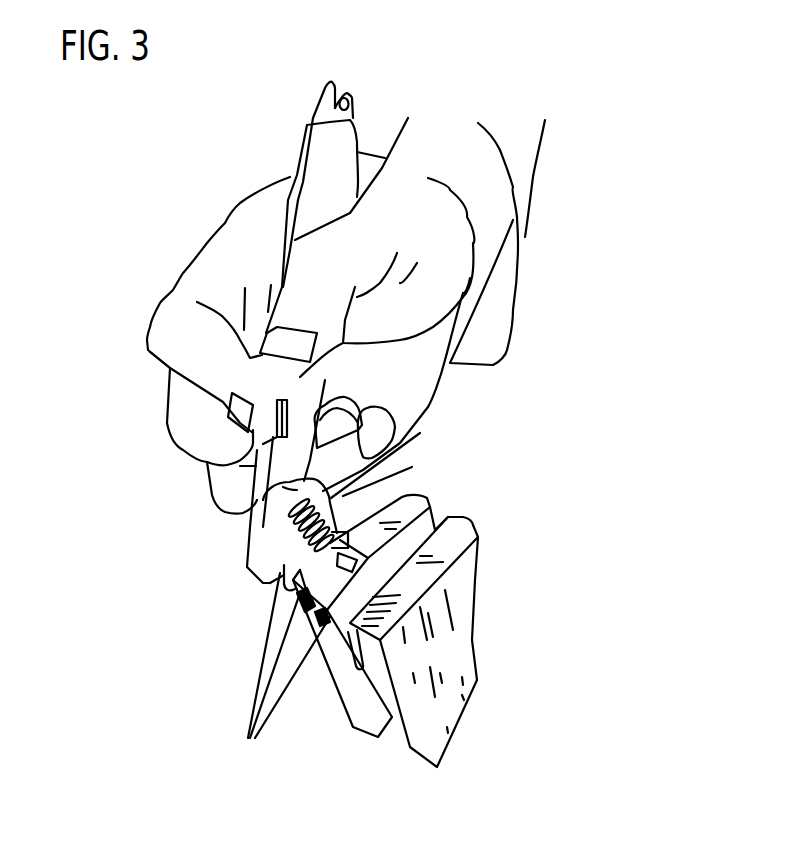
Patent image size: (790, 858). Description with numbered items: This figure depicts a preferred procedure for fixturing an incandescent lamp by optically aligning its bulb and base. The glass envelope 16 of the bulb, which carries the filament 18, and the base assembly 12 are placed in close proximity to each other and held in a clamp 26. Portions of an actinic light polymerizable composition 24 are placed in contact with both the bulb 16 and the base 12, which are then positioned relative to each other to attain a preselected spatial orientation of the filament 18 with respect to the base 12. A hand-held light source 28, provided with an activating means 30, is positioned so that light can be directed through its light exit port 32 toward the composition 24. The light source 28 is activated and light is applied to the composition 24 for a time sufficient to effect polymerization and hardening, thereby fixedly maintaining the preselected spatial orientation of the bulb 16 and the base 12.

The base assembly 12 is at (372, 583).
The glass envelope 16 is at (348, 538).
The filament 18 is at (385, 473).
The actinic light polymerizable composition 24 is at (260, 700).
The clamp 26 is at (445, 710).
The light source 28 is at (338, 145).
The activating means 30 is at (276, 423).
The light exit port 32 is at (297, 592).